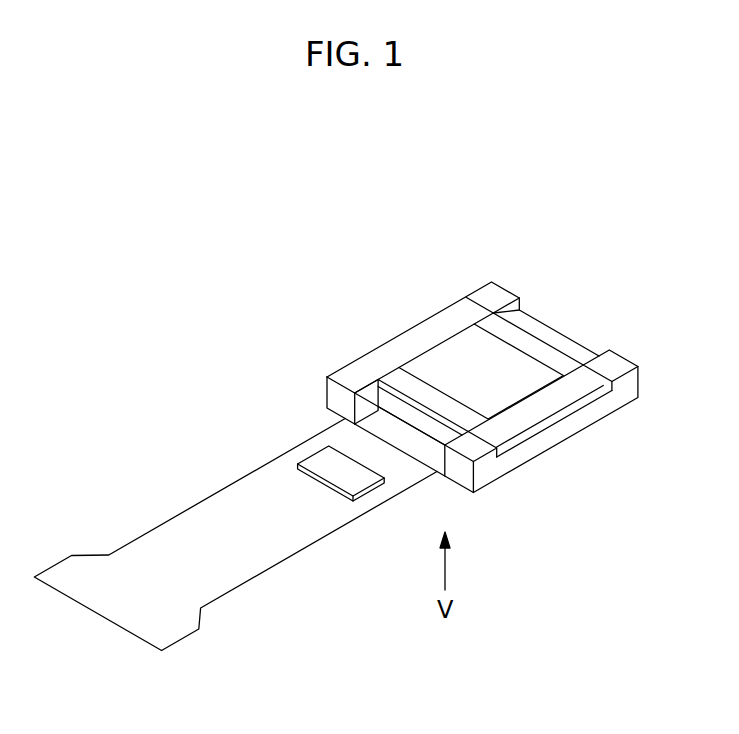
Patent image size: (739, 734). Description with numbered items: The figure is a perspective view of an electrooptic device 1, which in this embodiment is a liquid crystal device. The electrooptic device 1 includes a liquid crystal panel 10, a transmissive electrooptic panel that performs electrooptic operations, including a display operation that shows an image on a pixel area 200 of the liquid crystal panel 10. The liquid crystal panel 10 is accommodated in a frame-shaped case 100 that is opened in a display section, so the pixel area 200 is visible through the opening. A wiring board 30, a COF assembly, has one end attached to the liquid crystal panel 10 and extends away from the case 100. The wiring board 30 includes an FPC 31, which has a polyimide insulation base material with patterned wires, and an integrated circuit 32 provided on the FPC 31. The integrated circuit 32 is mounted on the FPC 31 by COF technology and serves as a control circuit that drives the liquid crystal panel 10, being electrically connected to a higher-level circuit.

The electrooptic device 1 is at (543, 303).
The liquid crystal panel 10 is at (393, 348).
The case 100 is at (628, 390).
The pixel area 200 is at (442, 352).
The wiring board 30 is at (228, 430).
The FPC 31 is at (230, 487).
The integrated circuit 32 is at (316, 463).